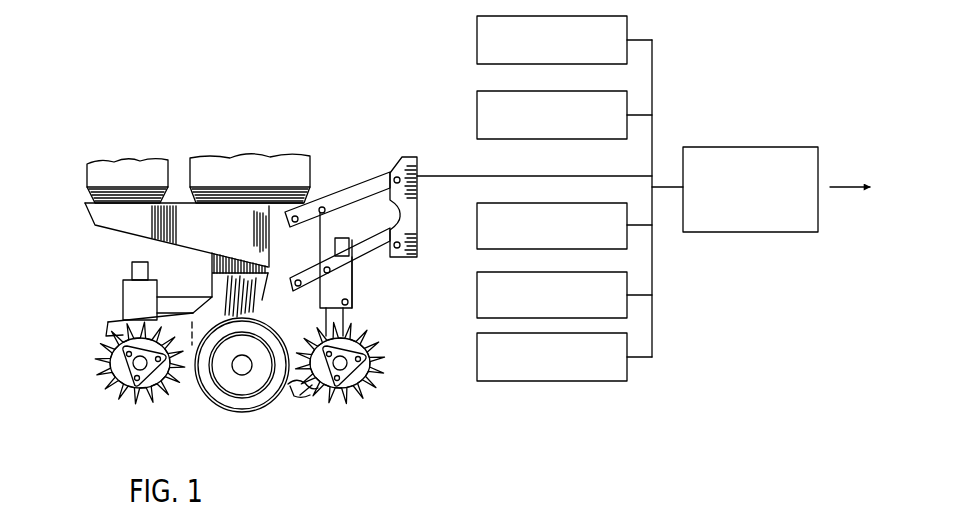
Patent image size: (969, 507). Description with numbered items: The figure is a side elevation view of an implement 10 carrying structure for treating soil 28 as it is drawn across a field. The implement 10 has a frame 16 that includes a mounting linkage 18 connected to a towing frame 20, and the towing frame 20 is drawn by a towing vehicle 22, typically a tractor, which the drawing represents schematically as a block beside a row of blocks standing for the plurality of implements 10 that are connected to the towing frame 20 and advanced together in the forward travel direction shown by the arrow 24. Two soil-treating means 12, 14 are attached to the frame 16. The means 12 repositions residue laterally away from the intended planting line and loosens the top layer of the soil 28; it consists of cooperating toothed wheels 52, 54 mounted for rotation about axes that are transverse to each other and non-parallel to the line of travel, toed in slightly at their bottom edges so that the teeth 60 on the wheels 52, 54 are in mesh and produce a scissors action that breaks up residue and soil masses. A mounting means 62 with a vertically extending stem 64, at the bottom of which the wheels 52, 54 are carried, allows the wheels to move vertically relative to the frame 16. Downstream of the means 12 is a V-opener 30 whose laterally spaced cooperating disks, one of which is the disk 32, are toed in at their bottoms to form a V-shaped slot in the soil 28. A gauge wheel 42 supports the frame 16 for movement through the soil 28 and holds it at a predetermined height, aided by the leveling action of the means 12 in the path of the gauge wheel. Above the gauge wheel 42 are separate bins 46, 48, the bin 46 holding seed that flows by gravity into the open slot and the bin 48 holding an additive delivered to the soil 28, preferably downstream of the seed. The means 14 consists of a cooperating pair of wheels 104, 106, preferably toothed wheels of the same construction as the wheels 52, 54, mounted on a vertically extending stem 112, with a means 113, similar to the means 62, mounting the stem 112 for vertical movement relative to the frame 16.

The implement 10 is at (477, 38).
The means for treating soil 12 is at (393, 345).
The means for treating soil 14 is at (95, 404).
The frame 16 is at (108, 229).
The mounting linkage 18 is at (388, 169).
The towing frame 20 is at (652, 330).
The towing vehicle 22 is at (740, 223).
The arrow 24 is at (838, 187).
The soil 28 is at (240, 389).
The V-opener 30 is at (297, 401).
The disk 32 is at (312, 384).
The gauge wheel 42 is at (243, 412).
The bin 46 is at (250, 153).
The bin 48 is at (127, 158).
The toothed wheel 52 is at (368, 318).
The toothed wheel 54 is at (365, 386).
The teeth 60 is at (358, 358).
The mounting means 62 is at (362, 279).
The stem 64 is at (341, 238).
The wheel 104 is at (112, 322).
The wheel 106 is at (123, 386).
The stem 112 is at (132, 268).
The means for mounting the stem 113 is at (163, 291).